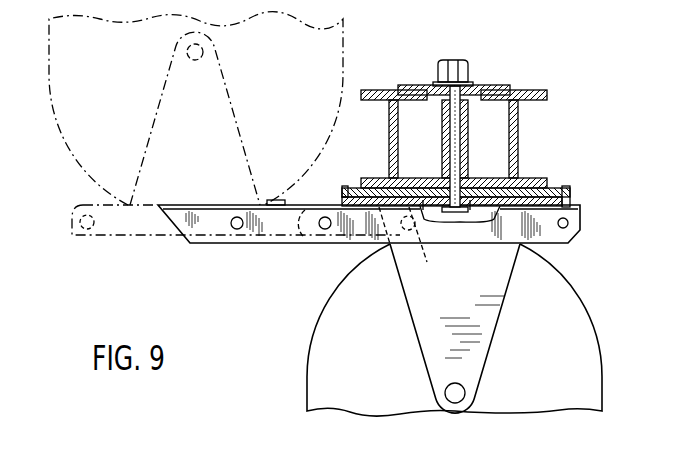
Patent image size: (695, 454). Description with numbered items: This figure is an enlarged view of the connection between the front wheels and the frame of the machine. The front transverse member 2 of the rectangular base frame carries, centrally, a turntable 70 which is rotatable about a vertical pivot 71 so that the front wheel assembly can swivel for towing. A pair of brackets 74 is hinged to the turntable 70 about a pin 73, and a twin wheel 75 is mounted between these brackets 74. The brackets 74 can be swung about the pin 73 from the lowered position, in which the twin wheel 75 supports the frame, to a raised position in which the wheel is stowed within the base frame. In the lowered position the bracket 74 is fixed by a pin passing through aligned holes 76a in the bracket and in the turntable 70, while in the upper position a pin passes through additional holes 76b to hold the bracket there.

The front transverse member 2 is at (518, 132).
The turntable 70 is at (560, 185).
The vertical pivot 71 is at (450, 140).
The pin 73 is at (324, 230).
The brackets 74 is at (221, 117).
The twin wheel 75 is at (328, 50).
The aligned holes 76a is at (88, 231).
The additional holes 76b is at (236, 230).